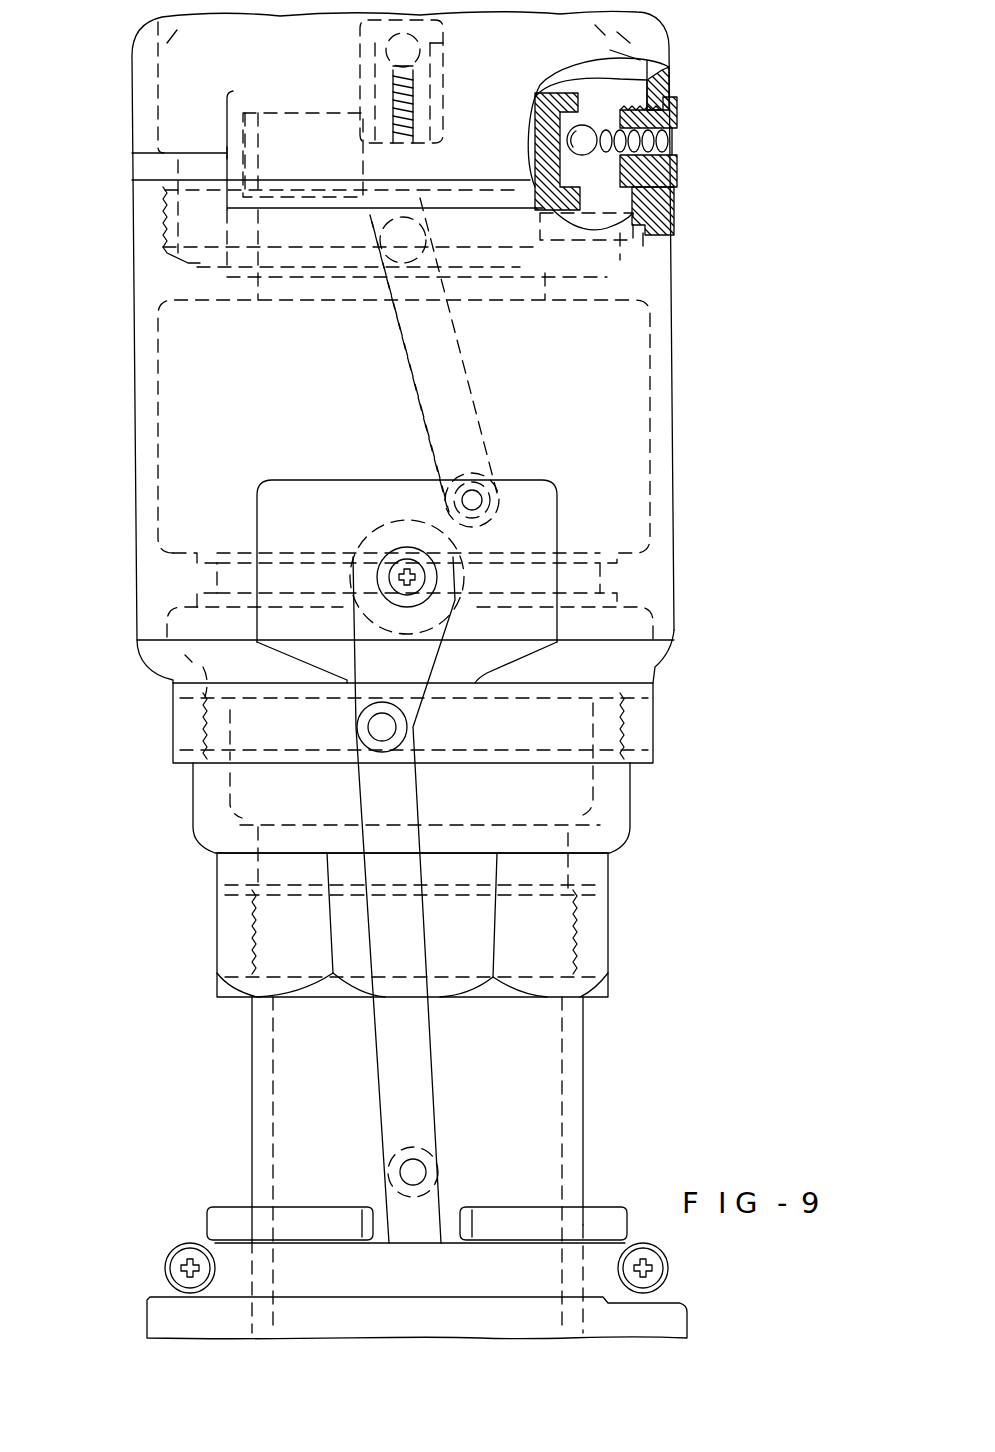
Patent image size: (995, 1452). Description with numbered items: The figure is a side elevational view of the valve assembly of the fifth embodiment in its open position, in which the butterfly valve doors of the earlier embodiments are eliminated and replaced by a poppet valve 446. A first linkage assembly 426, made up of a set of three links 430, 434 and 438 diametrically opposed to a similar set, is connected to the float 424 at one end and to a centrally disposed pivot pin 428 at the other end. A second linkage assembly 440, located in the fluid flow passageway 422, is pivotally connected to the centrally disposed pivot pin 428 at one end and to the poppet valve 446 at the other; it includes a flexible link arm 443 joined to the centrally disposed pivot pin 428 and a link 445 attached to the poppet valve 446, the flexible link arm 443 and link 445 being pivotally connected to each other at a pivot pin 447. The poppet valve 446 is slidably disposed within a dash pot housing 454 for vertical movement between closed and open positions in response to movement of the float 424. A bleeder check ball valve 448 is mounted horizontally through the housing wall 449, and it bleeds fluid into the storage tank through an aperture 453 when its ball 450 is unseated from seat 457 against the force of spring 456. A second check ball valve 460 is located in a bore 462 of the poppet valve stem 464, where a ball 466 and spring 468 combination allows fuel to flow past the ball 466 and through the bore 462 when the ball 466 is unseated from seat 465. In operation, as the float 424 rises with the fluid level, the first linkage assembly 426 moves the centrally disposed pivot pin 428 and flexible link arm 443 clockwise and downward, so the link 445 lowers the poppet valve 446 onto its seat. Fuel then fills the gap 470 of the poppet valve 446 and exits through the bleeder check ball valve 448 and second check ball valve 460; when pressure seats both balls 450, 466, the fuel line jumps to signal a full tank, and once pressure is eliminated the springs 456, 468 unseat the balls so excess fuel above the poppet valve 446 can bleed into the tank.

The fluid flow passageway 422 is at (650, 398).
The float 424 is at (687, 1307).
The first linkage assembly 426 is at (433, 1038).
The centrally disposed pivot pin 428 is at (453, 580).
The link 430 is at (440, 1197).
The link 434 is at (437, 1090).
The link 438 is at (617, 673).
The second linkage assembly 440 is at (465, 374).
The flexible link arm 443 is at (487, 527).
The link 445 is at (449, 337).
The poppet valve 446 is at (303, 212).
The pivot pin 447 is at (495, 485).
The bleeder check ball valve 448 is at (675, 130).
The housing wall 449 is at (675, 326).
The ball 450 is at (588, 131).
The aperture 453 is at (677, 145).
The dash pot housing 454 is at (132, 153).
The spring 456 is at (607, 121).
The seat 457 is at (627, 220).
The second check ball valve 460 is at (385, 100).
The bore 462 is at (420, 113).
The poppet valve stem 464 is at (437, 163).
The seat 465 is at (388, 103).
The ball 466 is at (391, 58).
The spring 468 is at (390, 127).
The gap 470 is at (447, 133).